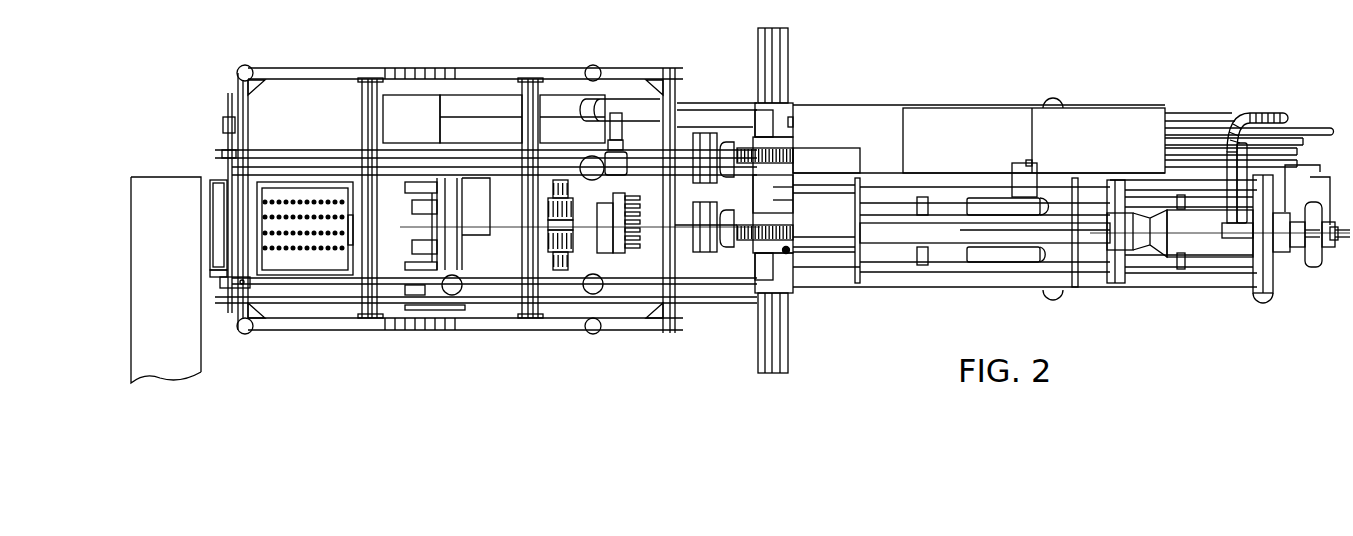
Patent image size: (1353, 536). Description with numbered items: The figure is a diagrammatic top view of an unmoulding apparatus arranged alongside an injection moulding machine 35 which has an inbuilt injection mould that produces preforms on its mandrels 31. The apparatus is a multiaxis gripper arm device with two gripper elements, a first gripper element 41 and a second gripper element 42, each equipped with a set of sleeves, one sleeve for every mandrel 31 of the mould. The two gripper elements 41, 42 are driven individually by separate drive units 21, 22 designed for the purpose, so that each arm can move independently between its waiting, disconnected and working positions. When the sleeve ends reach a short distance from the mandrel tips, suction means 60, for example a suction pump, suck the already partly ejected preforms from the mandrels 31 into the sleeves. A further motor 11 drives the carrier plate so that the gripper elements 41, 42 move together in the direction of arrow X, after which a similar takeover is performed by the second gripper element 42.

The further motor 11 is at (793, 253).
The drive unit 21 is at (770, 172).
The drive unit 22 is at (757, 218).
The mandrel 31 is at (633, 253).
The injection moulding machine 35 is at (880, 150).
The gripper element 41 is at (703, 130).
The gripper element 42 is at (702, 253).
The suction means 60 is at (778, 118).